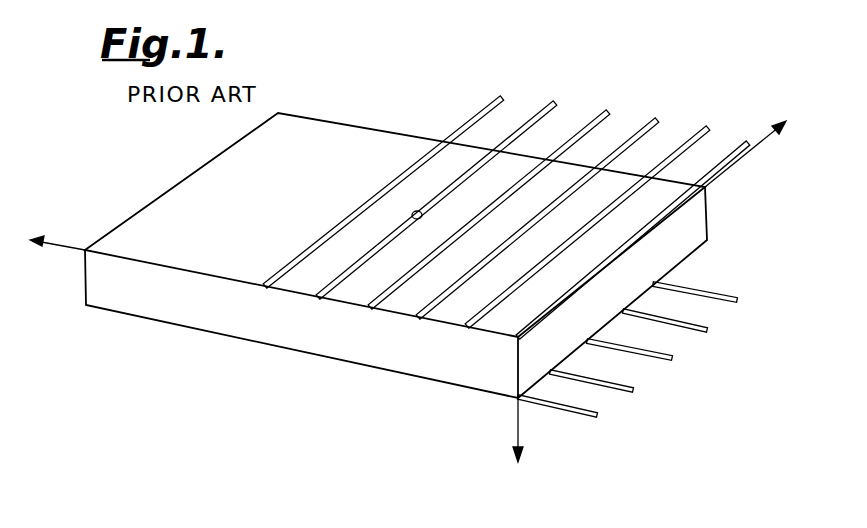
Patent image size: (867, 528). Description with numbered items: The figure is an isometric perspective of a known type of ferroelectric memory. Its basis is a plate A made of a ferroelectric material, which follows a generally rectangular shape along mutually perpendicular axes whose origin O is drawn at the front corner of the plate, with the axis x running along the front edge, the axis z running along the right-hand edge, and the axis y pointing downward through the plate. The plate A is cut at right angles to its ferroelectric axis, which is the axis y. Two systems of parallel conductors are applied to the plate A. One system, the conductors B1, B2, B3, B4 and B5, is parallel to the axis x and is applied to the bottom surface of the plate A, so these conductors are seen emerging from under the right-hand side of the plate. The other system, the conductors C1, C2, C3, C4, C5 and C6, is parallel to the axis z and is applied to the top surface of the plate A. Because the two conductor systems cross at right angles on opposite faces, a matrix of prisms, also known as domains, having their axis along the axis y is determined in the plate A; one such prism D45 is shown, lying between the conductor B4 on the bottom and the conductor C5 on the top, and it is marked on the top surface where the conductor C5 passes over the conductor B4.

The plate A is at (257, 323).
The conductor B1 is at (597, 415).
The conductor B2 is at (633, 390).
The conductor B3 is at (672, 358).
The conductor B4 is at (707, 330).
The conductor B5 is at (737, 300).
The conductor C1 is at (746, 143).
The conductor C2 is at (706, 128).
The conductor C3 is at (655, 120).
The conductor C4 is at (606, 112).
The conductor C5 is at (553, 103).
The conductor C6 is at (500, 98).
The prism D45 is at (413, 213).
The origin O is at (520, 339).
The axis ox x is at (57, 230).
The axis oy y is at (506, 432).
The axis oz z is at (748, 154).